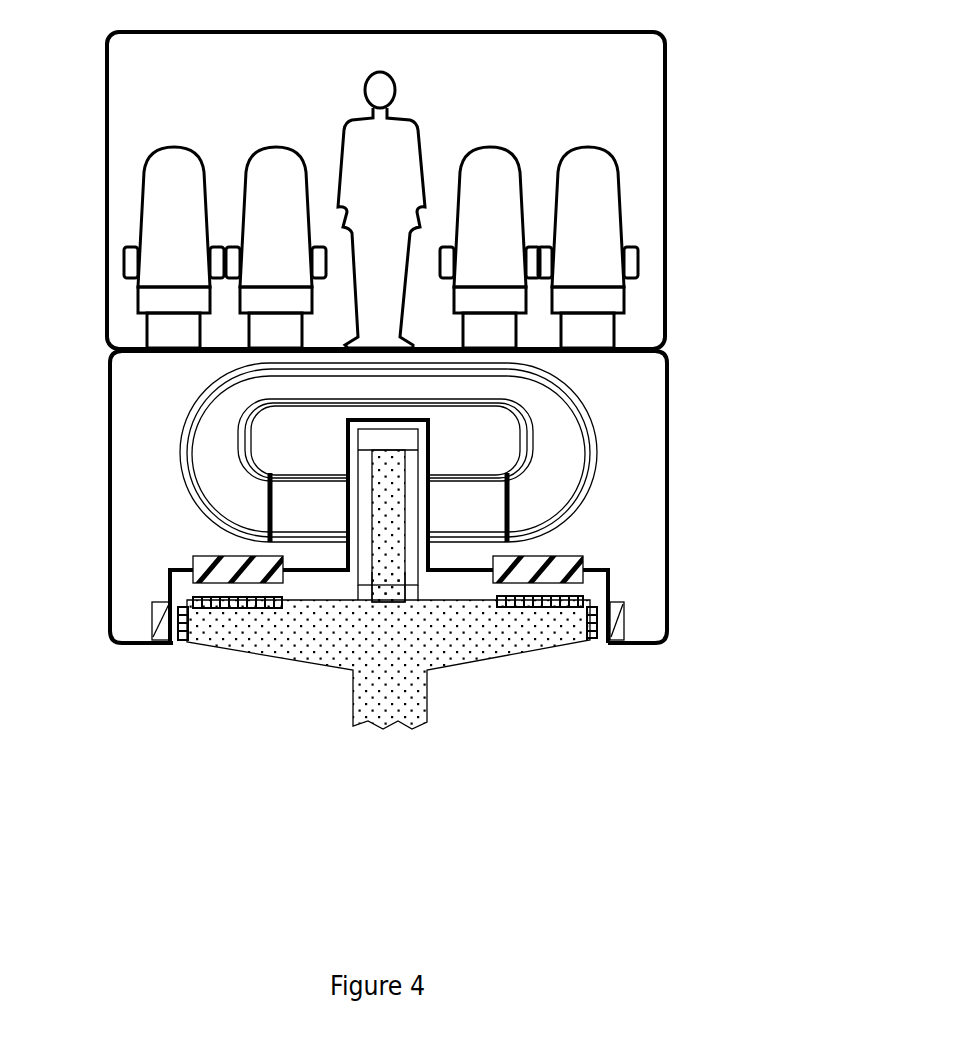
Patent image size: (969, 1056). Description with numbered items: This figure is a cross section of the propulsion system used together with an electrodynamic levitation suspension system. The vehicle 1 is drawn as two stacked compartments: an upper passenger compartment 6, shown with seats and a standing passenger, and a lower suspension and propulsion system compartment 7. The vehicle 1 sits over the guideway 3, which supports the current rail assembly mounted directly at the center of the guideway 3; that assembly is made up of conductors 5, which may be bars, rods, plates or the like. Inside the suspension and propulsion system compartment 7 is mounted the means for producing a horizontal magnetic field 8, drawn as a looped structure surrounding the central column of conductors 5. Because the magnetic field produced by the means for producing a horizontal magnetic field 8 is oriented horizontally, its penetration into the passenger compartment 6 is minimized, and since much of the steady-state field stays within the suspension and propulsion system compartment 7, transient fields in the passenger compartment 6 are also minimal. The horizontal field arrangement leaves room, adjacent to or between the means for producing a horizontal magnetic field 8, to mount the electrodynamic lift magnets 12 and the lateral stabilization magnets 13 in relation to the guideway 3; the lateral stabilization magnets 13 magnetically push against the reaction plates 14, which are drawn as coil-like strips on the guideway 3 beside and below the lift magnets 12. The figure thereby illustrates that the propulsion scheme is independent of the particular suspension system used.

The vehicle 1 is at (489, 337).
The guideway 3 is at (447, 643).
The conductors 5 is at (410, 570).
The passenger compartment 6 is at (667, 213).
The suspension and propulsion system compartment 7 is at (669, 403).
The means for producing a horizontal magnetic field 8 is at (322, 522).
The electrodynamic lift magnets 12 is at (190, 573).
The lateral stabilization magnets 13 is at (160, 618).
The reaction plates 14 is at (227, 605).